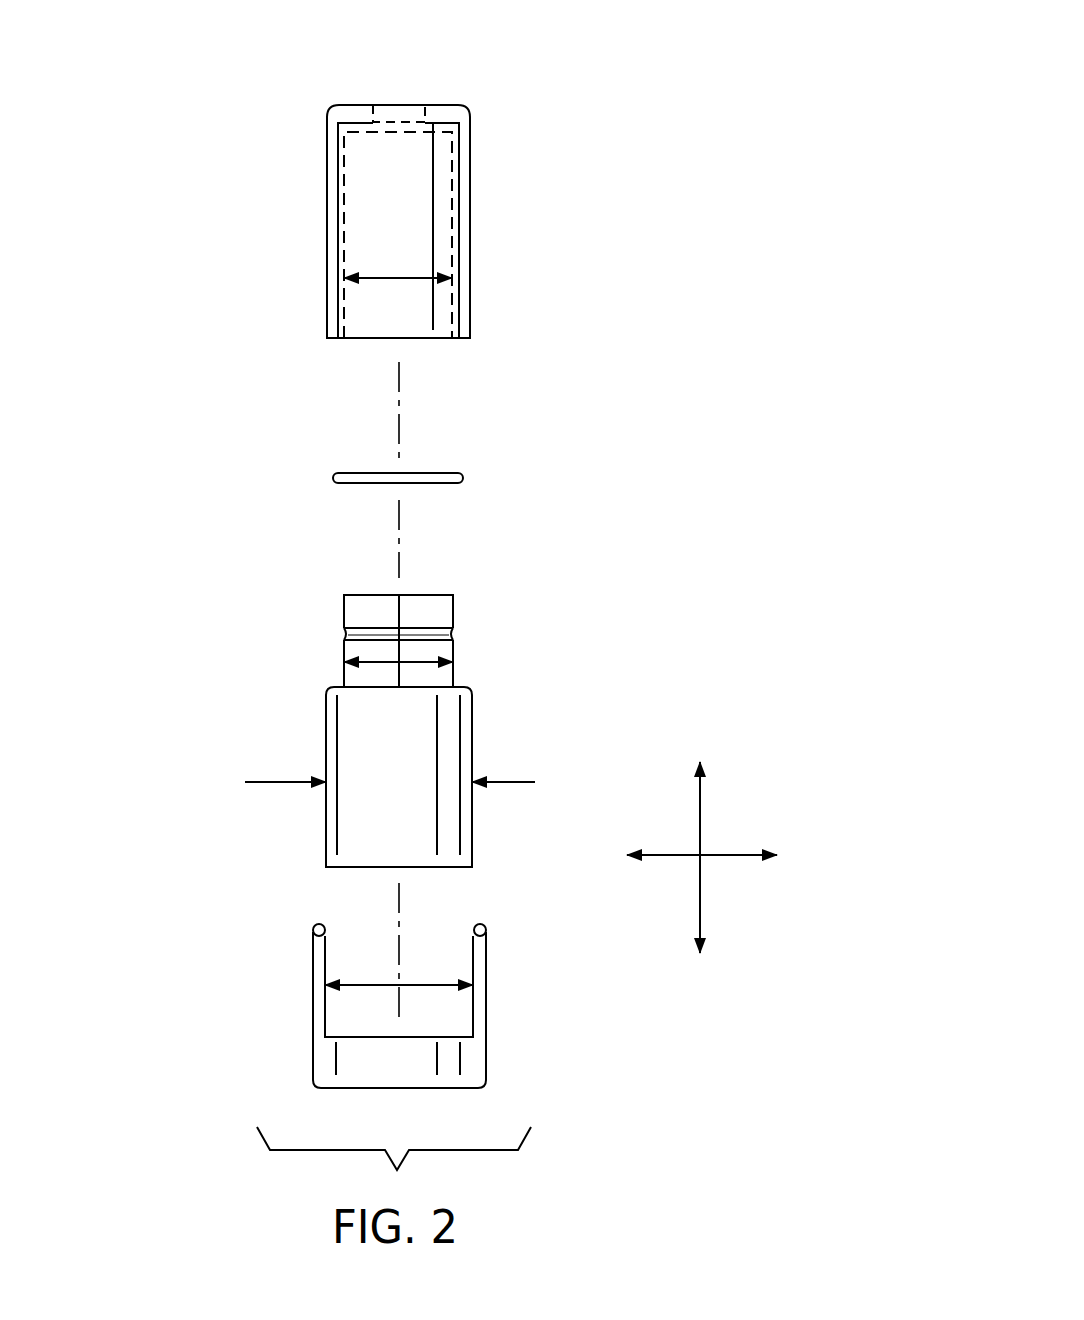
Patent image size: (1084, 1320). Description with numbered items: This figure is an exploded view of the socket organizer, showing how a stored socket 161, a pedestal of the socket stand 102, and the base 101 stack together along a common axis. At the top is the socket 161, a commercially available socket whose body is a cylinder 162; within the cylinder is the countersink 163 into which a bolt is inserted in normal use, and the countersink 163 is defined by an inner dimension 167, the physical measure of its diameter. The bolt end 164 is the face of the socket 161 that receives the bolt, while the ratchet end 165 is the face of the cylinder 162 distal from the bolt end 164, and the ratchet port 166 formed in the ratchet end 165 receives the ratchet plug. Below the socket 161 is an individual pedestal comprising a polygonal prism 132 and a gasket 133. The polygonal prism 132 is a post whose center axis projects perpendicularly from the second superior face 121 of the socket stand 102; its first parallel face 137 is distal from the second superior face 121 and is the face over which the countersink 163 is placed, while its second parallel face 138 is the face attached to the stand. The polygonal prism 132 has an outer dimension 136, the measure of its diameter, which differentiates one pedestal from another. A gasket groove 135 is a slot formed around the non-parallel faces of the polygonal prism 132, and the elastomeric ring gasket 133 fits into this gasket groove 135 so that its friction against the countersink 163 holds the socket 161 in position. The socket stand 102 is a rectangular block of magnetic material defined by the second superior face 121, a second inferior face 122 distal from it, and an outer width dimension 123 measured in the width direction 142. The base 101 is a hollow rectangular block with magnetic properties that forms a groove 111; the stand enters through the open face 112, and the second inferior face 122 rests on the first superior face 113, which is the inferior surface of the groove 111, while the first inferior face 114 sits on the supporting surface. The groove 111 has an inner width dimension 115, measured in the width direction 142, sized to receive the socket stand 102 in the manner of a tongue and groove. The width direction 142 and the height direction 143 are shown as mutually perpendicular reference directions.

The socket 161 is at (240, 128).
The cylinder 162 is at (470, 163).
The countersink 163 is at (410, 215).
The bolt end 164 is at (430, 338).
The ratchet end 165 is at (443, 104).
The ratchet port 166 is at (405, 105).
The inner dimension 167 is at (390, 278).
The gasket 133 is at (462, 478).
The polygonal prism 132 is at (428, 605).
The gasket groove 135 is at (345, 632).
The outer dimension 136 is at (392, 660).
The first parallel face 137 is at (360, 595).
The second superior face 121 is at (455, 685).
The second parallel face 138 is at (397, 688).
The socket stand 102 is at (472, 722).
The outer width dimension 123 is at (420, 774).
The second inferior face 122 is at (420, 867).
The width direction 142 is at (735, 852).
The height direction 143 is at (704, 835).
The base 101 is at (313, 1030).
The groove 111 is at (438, 955).
The open face 112 is at (352, 940).
The first superior face 113 is at (420, 1037).
The first inferior face 114 is at (388, 1088).
The inner width dimension 115 is at (388, 985).